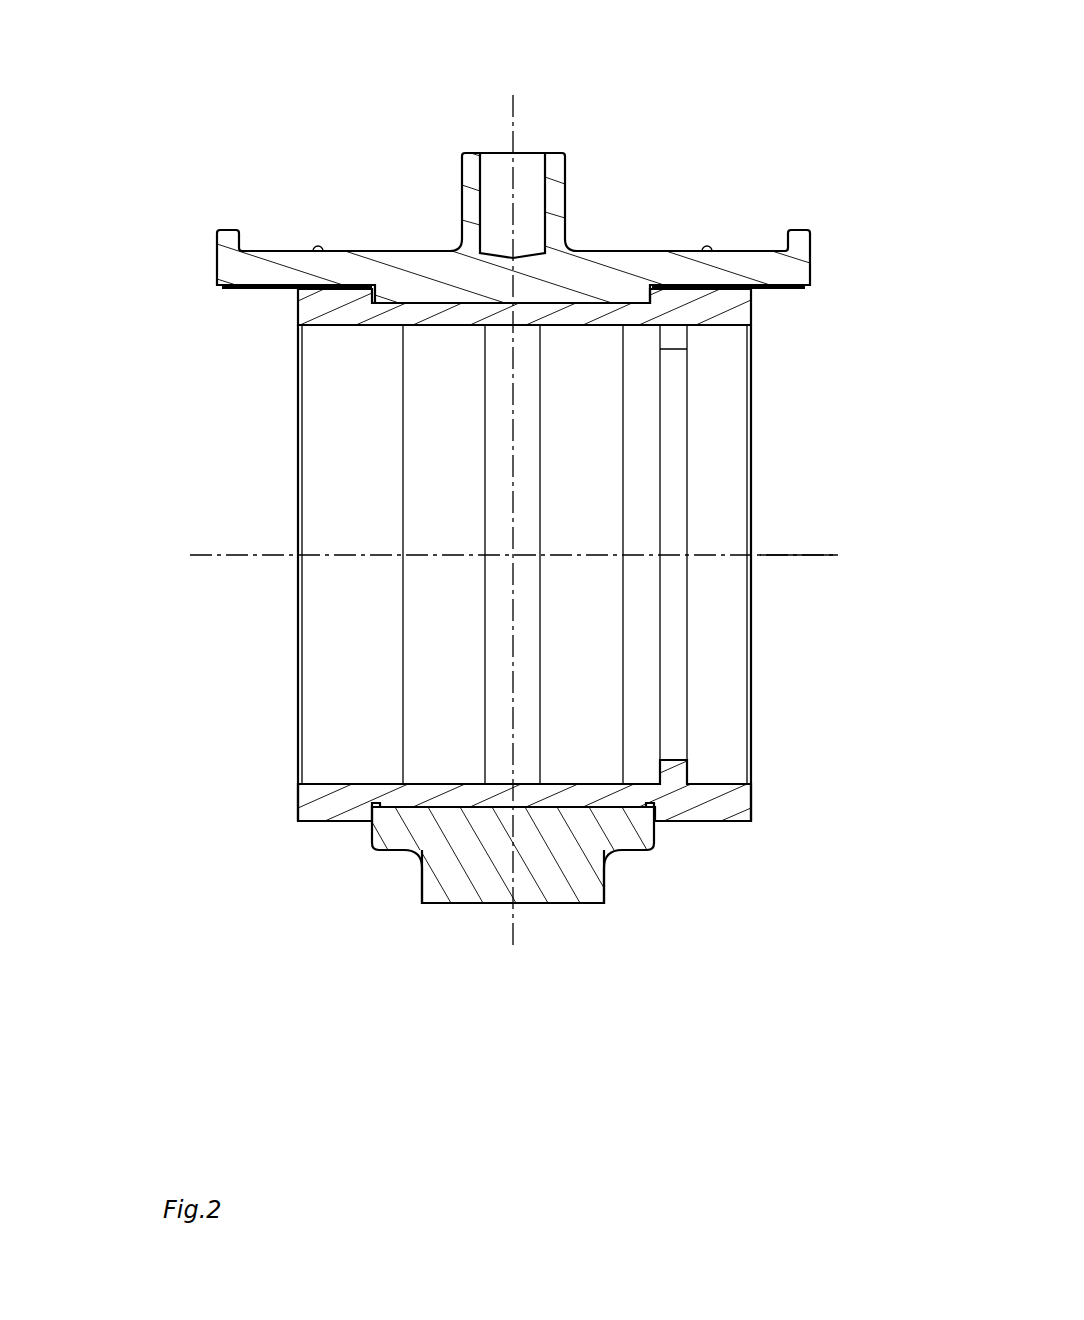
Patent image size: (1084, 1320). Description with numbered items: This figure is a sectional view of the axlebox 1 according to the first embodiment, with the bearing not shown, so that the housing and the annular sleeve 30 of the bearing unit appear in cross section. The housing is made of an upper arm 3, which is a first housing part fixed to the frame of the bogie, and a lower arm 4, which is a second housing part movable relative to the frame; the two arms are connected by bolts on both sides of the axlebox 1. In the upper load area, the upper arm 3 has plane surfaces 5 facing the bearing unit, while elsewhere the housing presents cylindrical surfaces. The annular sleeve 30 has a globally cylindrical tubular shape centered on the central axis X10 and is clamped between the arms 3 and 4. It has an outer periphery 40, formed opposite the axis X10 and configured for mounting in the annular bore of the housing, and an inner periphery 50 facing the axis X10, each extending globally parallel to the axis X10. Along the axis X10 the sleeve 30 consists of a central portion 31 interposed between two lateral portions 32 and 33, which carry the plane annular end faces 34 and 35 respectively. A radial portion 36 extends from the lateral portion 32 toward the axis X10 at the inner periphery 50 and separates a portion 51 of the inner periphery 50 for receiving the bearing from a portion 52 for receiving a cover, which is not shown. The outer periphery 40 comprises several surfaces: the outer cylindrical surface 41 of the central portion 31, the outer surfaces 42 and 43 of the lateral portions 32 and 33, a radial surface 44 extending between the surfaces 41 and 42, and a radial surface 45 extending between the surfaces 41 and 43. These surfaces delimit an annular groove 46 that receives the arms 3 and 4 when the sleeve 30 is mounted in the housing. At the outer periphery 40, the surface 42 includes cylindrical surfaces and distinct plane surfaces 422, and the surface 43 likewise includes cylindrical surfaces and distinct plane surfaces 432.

The axlebox 1 is at (253, 135).
The upper arm 3 is at (216, 266).
The plane surfaces 5 is at (513, 241).
The plane surfaces 432 is at (352, 285).
The plane surfaces 422 is at (732, 285).
The radial portion 36 is at (668, 336).
The central axis X10 is at (825, 555).
The inner periphery 50 is at (516, 536).
The portion for receiving bearing 51 is at (445, 777).
The portion for receiving cover 52 is at (710, 770).
The end face 35 is at (297, 794).
The annular sleeve 30 is at (510, 917).
The lateral portion 33 is at (332, 807).
The end face 34 is at (753, 805).
The outer surface 43 is at (343, 823).
The radial surface 45 is at (375, 818).
The outer periphery 40 is at (378, 932).
The annular groove 46 is at (447, 814).
The lower arm 4 is at (485, 880).
The outer cylindrical surface 41 is at (543, 813).
The central portion 31 is at (590, 795).
The radial surface 44 is at (652, 816).
The outer surface 42 is at (680, 823).
The lateral portion 32 is at (707, 800).